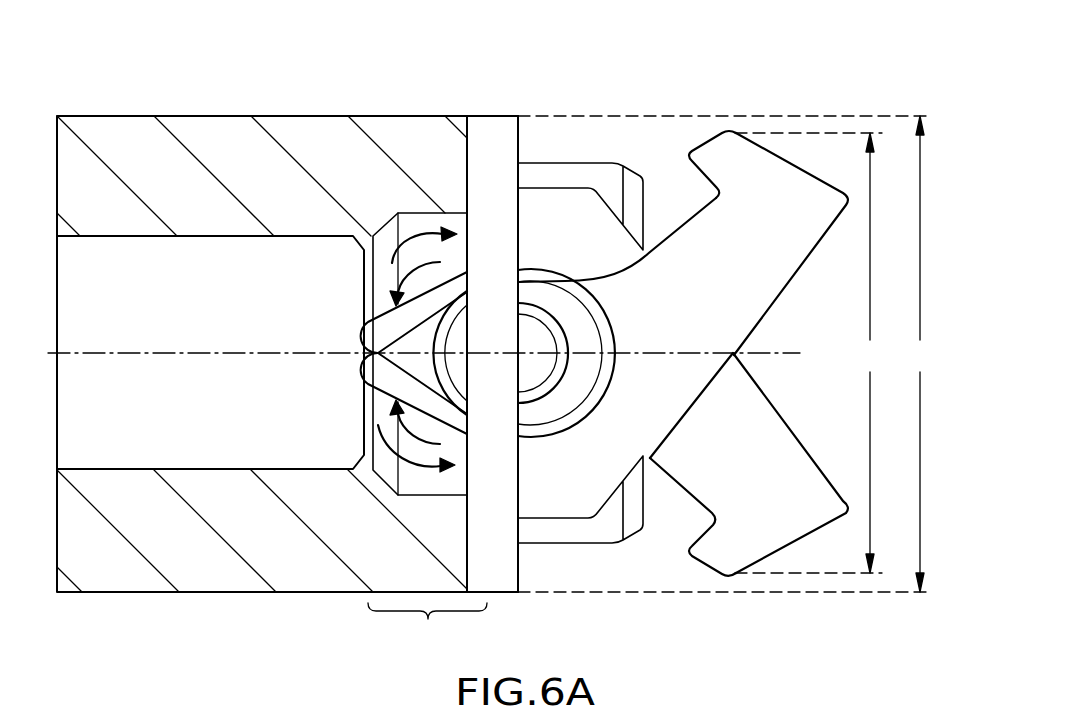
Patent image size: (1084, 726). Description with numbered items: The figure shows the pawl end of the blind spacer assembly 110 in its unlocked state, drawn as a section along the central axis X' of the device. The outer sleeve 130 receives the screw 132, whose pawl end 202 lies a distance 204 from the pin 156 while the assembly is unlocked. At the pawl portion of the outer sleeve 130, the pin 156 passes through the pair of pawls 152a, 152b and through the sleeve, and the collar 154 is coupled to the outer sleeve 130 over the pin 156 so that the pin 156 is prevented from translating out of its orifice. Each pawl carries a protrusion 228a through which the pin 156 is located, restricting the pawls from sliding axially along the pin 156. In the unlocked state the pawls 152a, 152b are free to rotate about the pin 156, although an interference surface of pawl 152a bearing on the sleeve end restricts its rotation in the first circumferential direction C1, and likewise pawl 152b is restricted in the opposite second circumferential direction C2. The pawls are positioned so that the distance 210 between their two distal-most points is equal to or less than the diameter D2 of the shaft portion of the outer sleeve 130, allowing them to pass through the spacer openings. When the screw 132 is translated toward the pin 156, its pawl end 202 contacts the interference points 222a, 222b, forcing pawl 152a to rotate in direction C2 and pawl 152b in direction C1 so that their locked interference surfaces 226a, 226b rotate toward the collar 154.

The blind spacer assembly 110 is at (160, 83).
The outer sleeve 130 is at (232, 148).
The screw 132 is at (173, 319).
The pawl 152a is at (732, 276).
The pawl 152b is at (765, 476).
The collar 154 is at (482, 138).
The pin 156 is at (543, 337).
The pawl end 202 is at (368, 263).
The distance 204 is at (427, 628).
The distance 210 is at (812, 353).
The interference point 222a is at (362, 375).
The interference point 222b is at (362, 331).
The locked interference surface 226a is at (693, 215).
The locked interference surface 226b is at (697, 495).
The protrusion 228a is at (540, 412).
The first circumferential direction C1 is at (421, 349).
The second circumferential direction C2 is at (414, 346).
The diameter D2 is at (725, 354).
The central axis X' is at (436, 353).